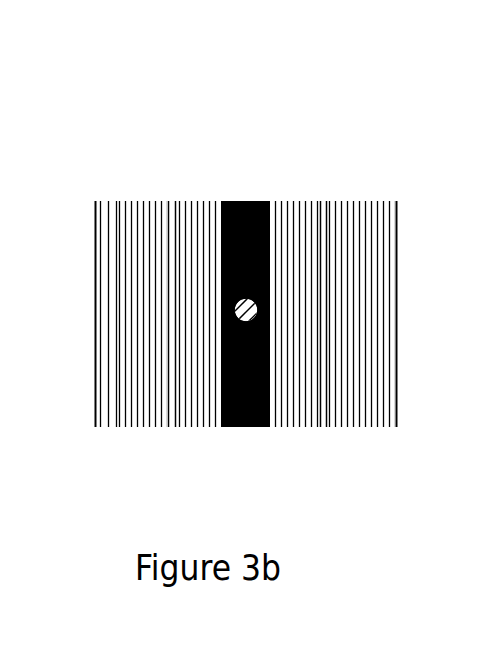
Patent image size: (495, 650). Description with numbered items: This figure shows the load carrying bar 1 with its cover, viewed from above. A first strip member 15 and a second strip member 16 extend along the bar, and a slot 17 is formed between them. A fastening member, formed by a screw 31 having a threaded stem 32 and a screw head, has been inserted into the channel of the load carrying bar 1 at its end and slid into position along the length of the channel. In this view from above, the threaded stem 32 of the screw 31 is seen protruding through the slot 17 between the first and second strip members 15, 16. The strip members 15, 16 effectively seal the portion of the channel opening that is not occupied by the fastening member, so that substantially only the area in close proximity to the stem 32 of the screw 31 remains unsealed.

The load carrying bar 1 is at (173, 257).
The first strip member 15 is at (224, 200).
The second strip member 16 is at (250, 197).
The slot 17 is at (240, 212).
The screw 31 is at (262, 290).
The threaded stem 32 is at (246, 310).